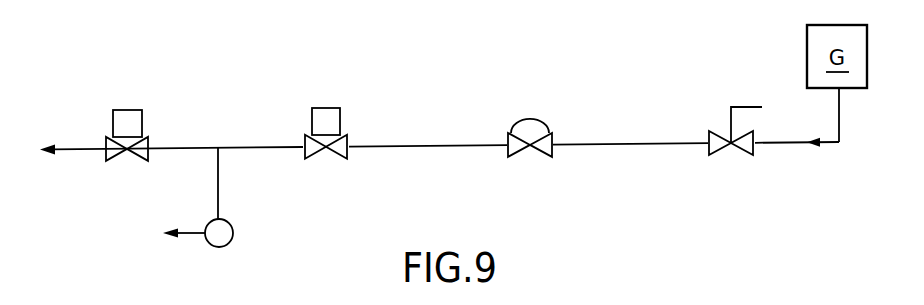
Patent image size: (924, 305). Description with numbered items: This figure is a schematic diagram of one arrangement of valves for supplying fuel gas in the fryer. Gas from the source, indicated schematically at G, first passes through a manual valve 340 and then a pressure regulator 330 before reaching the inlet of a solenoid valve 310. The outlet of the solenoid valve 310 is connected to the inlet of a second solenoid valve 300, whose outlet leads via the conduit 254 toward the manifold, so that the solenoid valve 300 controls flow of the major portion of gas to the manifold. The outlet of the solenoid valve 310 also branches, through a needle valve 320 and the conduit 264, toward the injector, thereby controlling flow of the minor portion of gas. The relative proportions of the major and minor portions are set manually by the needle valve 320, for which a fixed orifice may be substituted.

The conduit 254 is at (73, 147).
The conduit 264 is at (192, 232).
The solenoid valve 300 is at (138, 110).
The solenoid valve 310 is at (340, 108).
The needle valve 320 is at (233, 227).
The pressure regulator 330 is at (537, 118).
The manual valve 340 is at (712, 130).